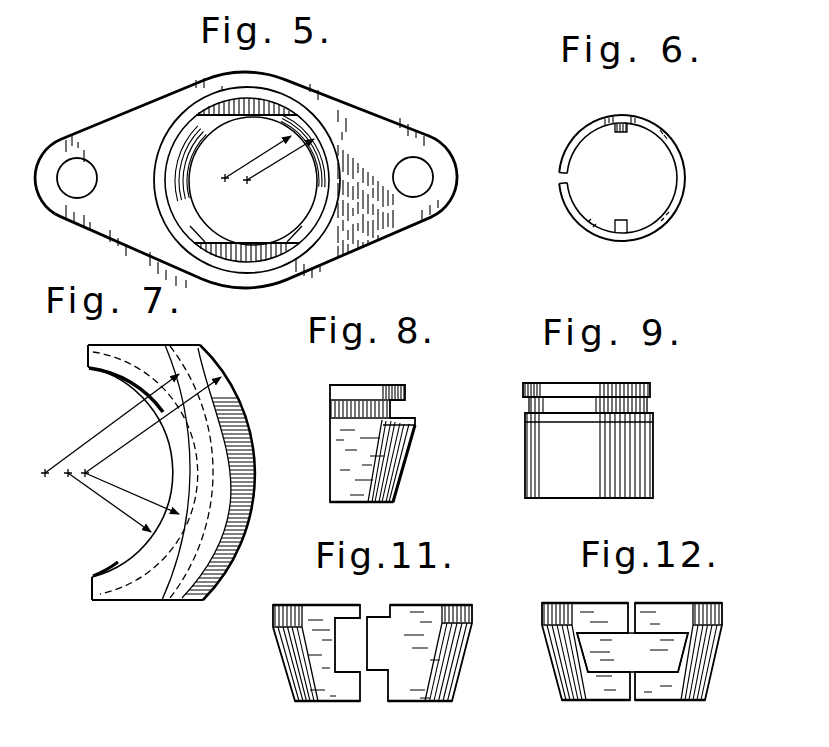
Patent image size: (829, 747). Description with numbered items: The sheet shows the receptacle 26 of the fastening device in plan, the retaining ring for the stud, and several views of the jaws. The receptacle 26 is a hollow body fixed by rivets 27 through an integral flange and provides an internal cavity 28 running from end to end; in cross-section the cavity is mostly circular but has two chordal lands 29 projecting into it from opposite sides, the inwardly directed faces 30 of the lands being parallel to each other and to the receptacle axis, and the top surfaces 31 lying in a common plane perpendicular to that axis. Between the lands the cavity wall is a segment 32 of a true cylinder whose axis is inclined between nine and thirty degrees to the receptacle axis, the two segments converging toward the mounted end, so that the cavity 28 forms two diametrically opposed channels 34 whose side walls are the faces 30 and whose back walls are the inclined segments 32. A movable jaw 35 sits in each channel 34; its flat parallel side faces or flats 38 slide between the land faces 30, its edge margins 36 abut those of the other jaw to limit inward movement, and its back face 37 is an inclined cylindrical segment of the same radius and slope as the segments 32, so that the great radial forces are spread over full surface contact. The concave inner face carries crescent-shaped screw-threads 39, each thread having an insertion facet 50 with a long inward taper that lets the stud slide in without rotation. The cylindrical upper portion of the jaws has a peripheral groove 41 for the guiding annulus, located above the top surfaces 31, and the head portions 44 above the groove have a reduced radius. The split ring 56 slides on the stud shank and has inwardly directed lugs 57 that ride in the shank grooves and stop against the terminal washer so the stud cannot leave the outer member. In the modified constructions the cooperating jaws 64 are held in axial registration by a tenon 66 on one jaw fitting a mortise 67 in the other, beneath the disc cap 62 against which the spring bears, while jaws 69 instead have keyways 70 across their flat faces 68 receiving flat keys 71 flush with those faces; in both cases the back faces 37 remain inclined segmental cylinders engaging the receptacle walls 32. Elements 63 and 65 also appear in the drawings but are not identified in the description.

In FIG. 5, the receptacle 26 is at (160, 138).
In FIG. 5, the rivets 27 is at (408, 132).
In FIG. 5, the internal cavity 28 is at (233, 233).
In FIG. 5, the chordal lands 29 is at (203, 110).
In FIG. 5, the inwardly directed faces 30 is at (236, 117).
In FIG. 5, the top surfaces 31 is at (260, 100).
In FIG. 5, the cylindrical segment 32 is at (326, 182).
In FIG. 5, the channels 34 is at (200, 218).
In FIG. 7, the movable jaw 35 is at (191, 606).
In FIG. 8, the movable jaw 35 is at (394, 504).
In FIG. 9, the movable jaw 35 is at (656, 470).
In FIG. 7, the edge margins 36 is at (88, 352).
In FIG. 8, the edge margins 36 is at (330, 488).
In FIG. 7, the back face 37 is at (246, 414).
In FIG. 8, the back face 37 is at (413, 462).
In FIG. 9, the back face 37 is at (562, 490).
In FIG. 11, the back face 37 is at (288, 678).
In FIG. 12, the back face 37 is at (547, 643).
In FIG. 7, the flats 38 is at (165, 345).
In FIG. 8, the flats 38 is at (338, 443).
In FIG. 7, the screw-threads 39 is at (135, 555).
In FIG. 8, the peripheral groove 41 is at (400, 409).
In FIG. 9, the peripheral groove 41 is at (651, 410).
In FIG. 7, the head portions 44 is at (213, 399).
In FIG. 8, the head portions 44 is at (407, 392).
In FIG. 9, the head portions 44 is at (547, 383).
In FIG. 7, the insertion facet 50 is at (175, 458).
In FIG. 6, the split ring 56 is at (684, 160).
In FIG. 6, the lug 57 is at (622, 220).
In FIG. 11, the disc cap 62 is at (385, 676).
In FIG. 12, the bushing segment 63 is at (624, 675).
In FIG. 11, the cooperating jaws 64 is at (337, 703).
In FIG. 11, the gap 65 is at (387, 695).
In FIG. 11, the tenon 66 is at (378, 618).
In FIG. 11, the mortise 67 is at (337, 618).
In FIG. 12, the flat faces 68 is at (655, 608).
In FIG. 12, the jaws 69 is at (580, 702).
In FIG. 12, the keyways 70 is at (582, 655).
In FIG. 12, the flat keys 71 is at (650, 668).